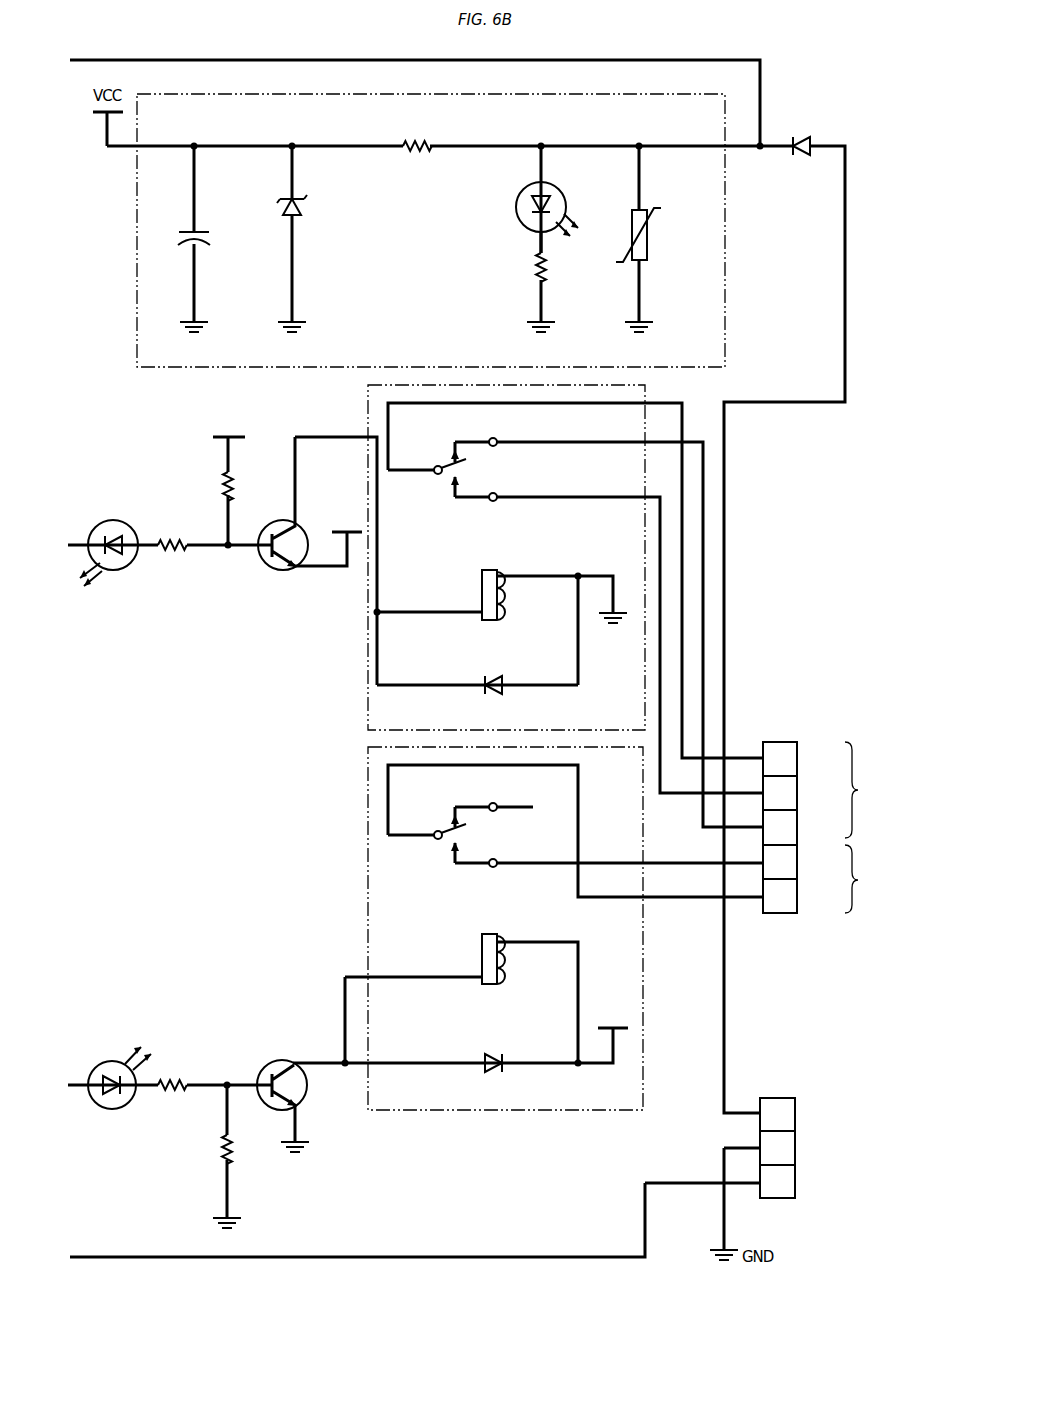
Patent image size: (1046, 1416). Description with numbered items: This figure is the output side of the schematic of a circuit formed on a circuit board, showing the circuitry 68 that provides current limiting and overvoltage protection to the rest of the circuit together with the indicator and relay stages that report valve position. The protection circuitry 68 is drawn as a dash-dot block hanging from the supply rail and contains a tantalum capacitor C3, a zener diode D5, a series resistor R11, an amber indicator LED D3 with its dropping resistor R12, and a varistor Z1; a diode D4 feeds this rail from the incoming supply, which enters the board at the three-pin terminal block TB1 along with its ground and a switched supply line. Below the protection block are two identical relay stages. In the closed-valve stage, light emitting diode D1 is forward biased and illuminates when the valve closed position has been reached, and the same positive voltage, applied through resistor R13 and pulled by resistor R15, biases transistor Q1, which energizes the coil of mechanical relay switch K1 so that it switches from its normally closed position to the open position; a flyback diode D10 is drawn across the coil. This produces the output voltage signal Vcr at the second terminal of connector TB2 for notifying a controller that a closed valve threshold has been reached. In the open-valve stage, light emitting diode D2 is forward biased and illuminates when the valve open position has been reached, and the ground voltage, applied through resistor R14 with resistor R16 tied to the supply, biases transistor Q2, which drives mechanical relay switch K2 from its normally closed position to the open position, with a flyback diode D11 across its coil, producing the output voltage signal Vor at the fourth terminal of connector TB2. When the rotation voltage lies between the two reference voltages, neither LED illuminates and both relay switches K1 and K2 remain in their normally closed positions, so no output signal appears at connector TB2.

The circuitry 68 is at (725, 297).
The tantalum capacitor 22uF 35V C3 is at (206, 240).
The zener diode 1N5256 D5 is at (295, 240).
The resistor 4.7 ohm 1/2W carbon composition R11 is at (419, 170).
The amber LED LN1461C D3 is at (564, 240).
The resistor 4.3K R12 is at (538, 274).
The varistor V47ZA1 Z1 is at (656, 240).
The diode S1JB D4 is at (805, 146).
The mechanical relay switch K2 is at (529, 606).
The diode S1JB D11 is at (478, 694).
The mechanical relay switch K1 is at (540, 928).
The diode S1JB D10 is at (478, 1071).
The tb2 connector TB2 is at (785, 827).
The 3-pin terminal block TB1 is at (825, 1147).
The light emitting diode D2 is at (110, 546).
The resistor 4.3K R14 is at (213, 548).
The resistor 10K R16 is at (224, 481).
The transistor Q2 is at (306, 517).
The light emitting diode D1 is at (109, 1069).
The resistor 4.3K R13 is at (214, 1088).
The resistor 10K R15 is at (234, 1159).
The transistor Q1 is at (301, 1098).